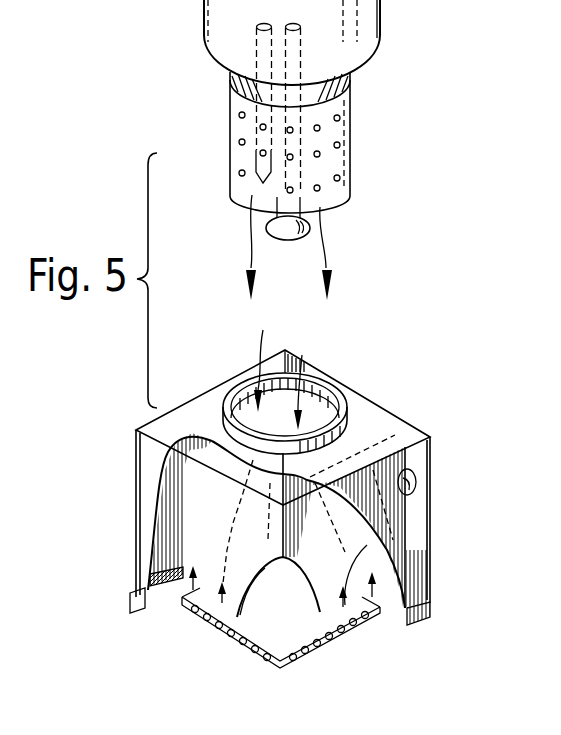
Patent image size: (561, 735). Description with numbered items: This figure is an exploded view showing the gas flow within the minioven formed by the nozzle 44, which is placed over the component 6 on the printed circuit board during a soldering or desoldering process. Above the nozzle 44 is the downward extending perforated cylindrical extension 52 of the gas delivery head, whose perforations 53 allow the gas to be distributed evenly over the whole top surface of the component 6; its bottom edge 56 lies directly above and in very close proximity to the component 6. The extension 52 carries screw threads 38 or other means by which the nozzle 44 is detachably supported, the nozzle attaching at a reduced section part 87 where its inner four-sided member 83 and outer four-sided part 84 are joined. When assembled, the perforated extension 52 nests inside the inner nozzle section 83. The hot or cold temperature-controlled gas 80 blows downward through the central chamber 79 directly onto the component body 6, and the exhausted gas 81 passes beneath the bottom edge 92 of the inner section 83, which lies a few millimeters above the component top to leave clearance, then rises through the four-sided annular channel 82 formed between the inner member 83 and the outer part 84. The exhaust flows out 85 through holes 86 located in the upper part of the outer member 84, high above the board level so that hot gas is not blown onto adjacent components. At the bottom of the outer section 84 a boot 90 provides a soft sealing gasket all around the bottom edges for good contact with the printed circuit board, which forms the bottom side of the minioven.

The component 6 is at (300, 632).
The screw threads 38 is at (350, 101).
The nozzle 44 is at (455, 455).
The cylindrical extension 52 is at (338, 170).
The perforations 53 is at (239, 141).
The bottom edge 56 is at (309, 217).
The central chamber 79 is at (295, 597).
The temperature-controlled gas 80 is at (327, 252).
The exhausted gas 81 is at (183, 598).
The annular channel 82 is at (177, 547).
The inner 4-sided member 83 is at (210, 518).
The outer 4-sided part 84 is at (152, 464).
The outflow 85 is at (408, 450).
The holes 86 is at (418, 486).
The reduced section part 87 is at (348, 417).
The boot 90 is at (423, 626).
The bottom edge 92 is at (362, 623).